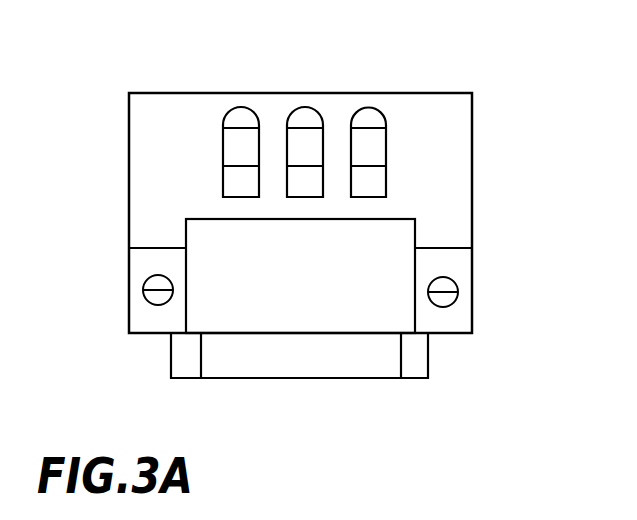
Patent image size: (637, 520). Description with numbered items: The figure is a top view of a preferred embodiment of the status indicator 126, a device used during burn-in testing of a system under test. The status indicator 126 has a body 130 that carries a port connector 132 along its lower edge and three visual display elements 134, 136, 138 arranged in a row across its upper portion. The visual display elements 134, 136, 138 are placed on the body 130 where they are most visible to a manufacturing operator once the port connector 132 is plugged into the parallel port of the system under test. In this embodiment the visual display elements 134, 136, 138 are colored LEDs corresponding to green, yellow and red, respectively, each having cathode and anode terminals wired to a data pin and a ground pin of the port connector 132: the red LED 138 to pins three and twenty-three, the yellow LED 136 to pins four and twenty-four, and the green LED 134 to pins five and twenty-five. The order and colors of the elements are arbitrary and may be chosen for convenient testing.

The status indicator 126 is at (117, 50).
The body 130 is at (472, 169).
The port connector 132 is at (297, 378).
The visual display element 134 is at (236, 108).
The visual display element 136 is at (307, 108).
The visual display element 138 is at (368, 108).